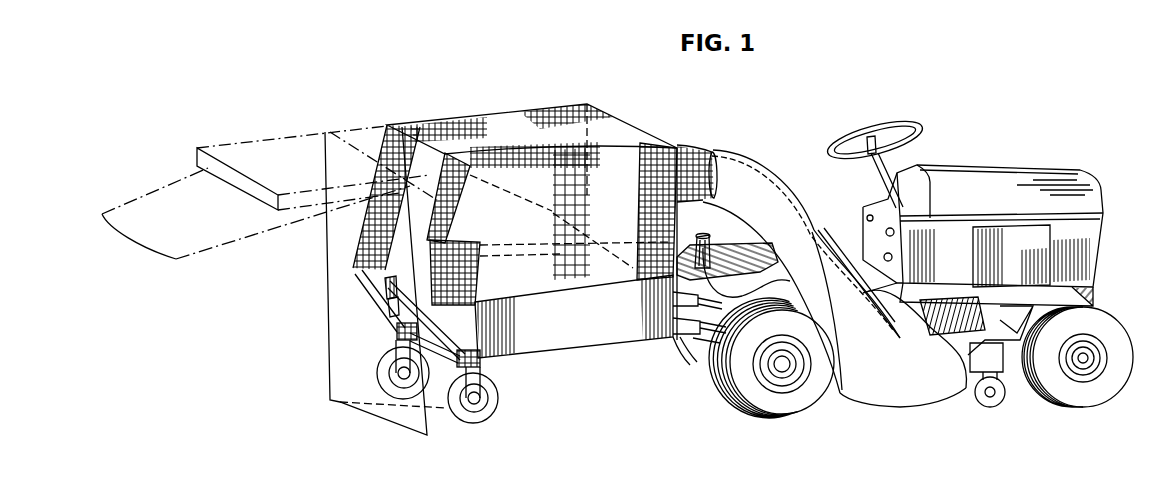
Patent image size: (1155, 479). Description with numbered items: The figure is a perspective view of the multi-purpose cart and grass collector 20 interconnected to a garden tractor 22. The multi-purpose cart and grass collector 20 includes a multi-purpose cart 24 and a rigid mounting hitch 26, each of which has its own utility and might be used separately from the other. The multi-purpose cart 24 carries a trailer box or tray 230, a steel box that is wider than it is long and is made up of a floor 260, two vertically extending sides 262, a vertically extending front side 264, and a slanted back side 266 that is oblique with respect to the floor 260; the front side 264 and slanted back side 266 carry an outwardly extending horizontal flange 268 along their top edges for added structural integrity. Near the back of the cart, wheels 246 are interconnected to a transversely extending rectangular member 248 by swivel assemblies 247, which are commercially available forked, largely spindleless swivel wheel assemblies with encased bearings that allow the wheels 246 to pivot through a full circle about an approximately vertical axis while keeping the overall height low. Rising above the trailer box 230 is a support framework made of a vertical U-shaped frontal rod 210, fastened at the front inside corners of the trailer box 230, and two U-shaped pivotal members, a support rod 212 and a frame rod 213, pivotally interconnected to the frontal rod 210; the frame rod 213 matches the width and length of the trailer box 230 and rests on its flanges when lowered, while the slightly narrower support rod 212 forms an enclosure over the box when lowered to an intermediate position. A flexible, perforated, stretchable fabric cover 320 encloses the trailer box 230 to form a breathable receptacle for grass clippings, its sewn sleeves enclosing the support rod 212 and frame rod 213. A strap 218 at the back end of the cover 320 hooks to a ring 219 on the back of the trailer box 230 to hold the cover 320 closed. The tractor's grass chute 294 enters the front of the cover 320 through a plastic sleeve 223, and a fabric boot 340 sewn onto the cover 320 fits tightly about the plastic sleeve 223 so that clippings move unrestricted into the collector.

The multi-purpose cart and grass collector 20 is at (597, 372).
The garden tractor 22 is at (984, 166).
The multi-purpose cart 24 is at (580, 332).
The rigid mounting hitch 26 is at (708, 336).
The frontal rod 210 is at (566, 100).
The support rod 212 is at (540, 214).
The frame rod 213 is at (357, 272).
The strap 218 is at (387, 284).
The ring 219 is at (393, 306).
The plastic sleeve 223 is at (713, 152).
The trailer box 230 is at (619, 342).
The wheels 246 is at (395, 390).
The swivel assemblies 247 is at (480, 366).
The transversely extending rectangular member 248 is at (445, 415).
The floor 260 is at (397, 328).
The sides 262 is at (537, 343).
The front side 264 is at (662, 220).
The slanted back side 266 is at (385, 346).
The horizontal flange 268 is at (704, 290).
The grass chute 294 is at (730, 170).
The fabric cover 320 is at (489, 121).
The fabric boot 340 is at (684, 145).